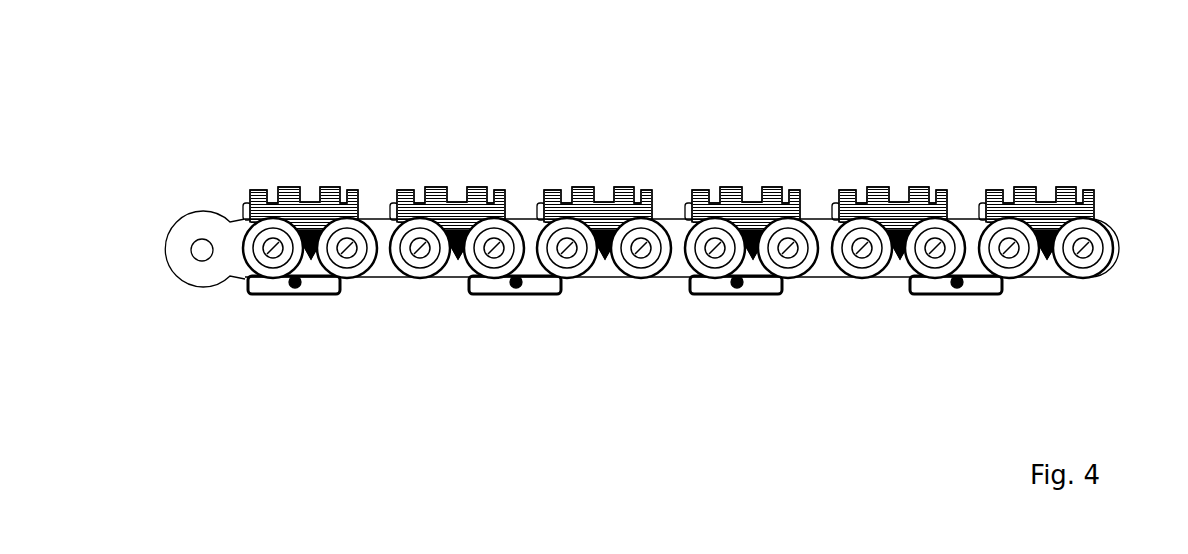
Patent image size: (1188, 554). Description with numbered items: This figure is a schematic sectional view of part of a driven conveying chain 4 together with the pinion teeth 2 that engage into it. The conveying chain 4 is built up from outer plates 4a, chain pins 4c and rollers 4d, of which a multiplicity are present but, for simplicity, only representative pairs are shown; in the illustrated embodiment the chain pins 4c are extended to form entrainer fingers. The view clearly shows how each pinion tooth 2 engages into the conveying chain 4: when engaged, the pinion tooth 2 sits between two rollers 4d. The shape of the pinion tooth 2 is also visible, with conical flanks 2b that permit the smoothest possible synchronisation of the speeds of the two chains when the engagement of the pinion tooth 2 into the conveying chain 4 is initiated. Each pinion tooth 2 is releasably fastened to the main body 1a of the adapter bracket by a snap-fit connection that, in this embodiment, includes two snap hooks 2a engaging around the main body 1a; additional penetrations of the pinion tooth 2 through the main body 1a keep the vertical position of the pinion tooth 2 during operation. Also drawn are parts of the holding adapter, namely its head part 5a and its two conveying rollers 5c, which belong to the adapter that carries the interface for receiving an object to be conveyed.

The main body 1a is at (310, 198).
The pinion tooth 2 is at (323, 247).
The snap hooks 2a is at (268, 198).
The conical flanks 2b is at (452, 258).
The conveying chain 4 is at (610, 293).
The outer plates 4a is at (190, 228).
The chain pins 4c is at (398, 277).
The rollers 4d is at (257, 252).
The head part 5a is at (517, 282).
The conveying rollers 5c is at (250, 203).